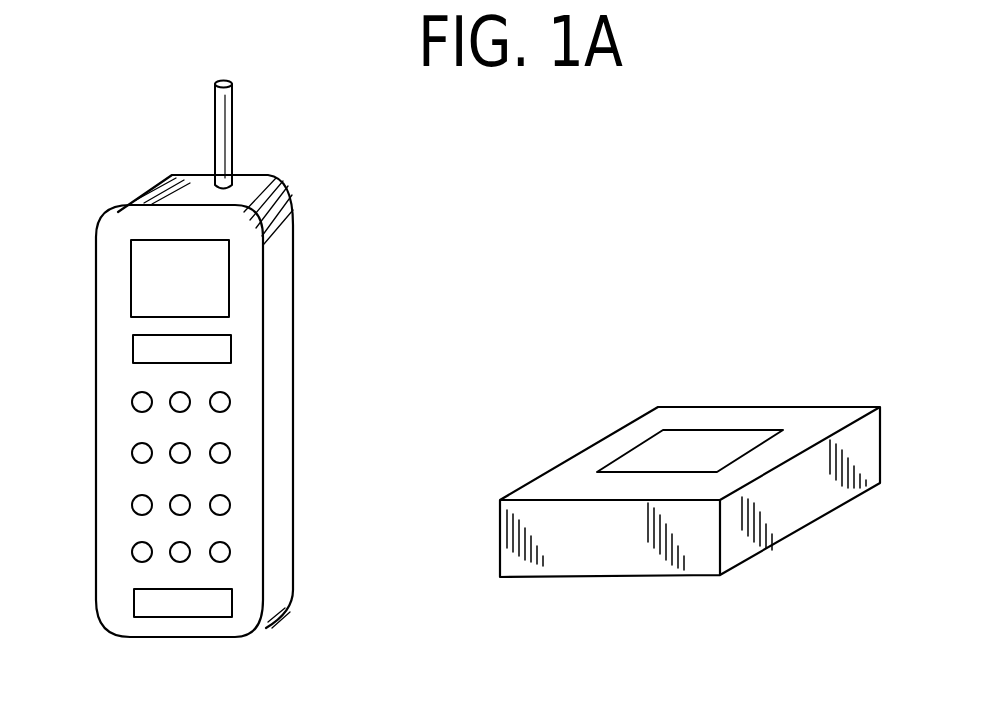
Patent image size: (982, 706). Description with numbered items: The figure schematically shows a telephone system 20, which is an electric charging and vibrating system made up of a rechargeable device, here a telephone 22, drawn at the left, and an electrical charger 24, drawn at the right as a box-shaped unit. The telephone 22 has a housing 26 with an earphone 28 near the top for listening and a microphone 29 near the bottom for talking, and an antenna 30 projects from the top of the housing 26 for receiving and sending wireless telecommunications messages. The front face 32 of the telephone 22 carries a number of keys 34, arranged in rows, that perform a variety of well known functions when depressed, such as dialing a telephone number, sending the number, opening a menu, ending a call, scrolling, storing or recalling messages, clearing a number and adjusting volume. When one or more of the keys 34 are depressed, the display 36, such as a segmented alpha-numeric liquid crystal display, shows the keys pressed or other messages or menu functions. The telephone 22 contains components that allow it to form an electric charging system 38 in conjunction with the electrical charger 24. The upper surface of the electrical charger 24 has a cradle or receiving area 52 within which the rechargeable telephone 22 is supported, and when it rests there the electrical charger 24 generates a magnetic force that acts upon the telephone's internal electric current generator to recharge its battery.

The telephone system 20 is at (451, 425).
The telephone 22 is at (283, 556).
The electrical charger 24 is at (785, 515).
The housing 26 is at (277, 364).
The earphone 28 is at (218, 262).
The microphone 29 is at (186, 605).
The antenna 30 is at (232, 123).
The front face 32 is at (120, 422).
The keys 34 is at (132, 453).
The display 36 is at (218, 346).
The electric charging system 38 is at (588, 389).
The cradle or receiving area 52 is at (710, 440).